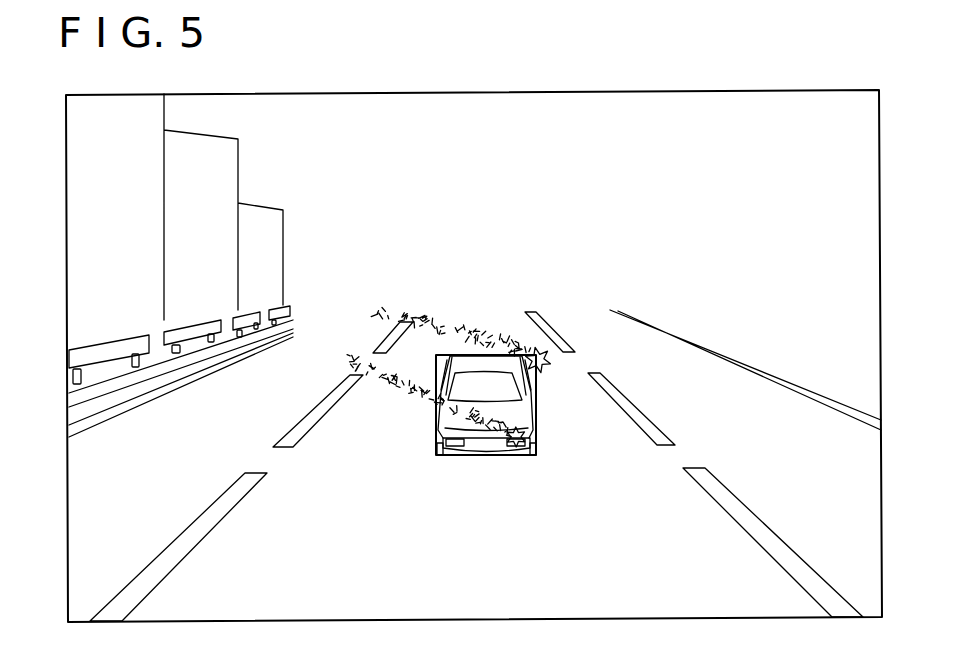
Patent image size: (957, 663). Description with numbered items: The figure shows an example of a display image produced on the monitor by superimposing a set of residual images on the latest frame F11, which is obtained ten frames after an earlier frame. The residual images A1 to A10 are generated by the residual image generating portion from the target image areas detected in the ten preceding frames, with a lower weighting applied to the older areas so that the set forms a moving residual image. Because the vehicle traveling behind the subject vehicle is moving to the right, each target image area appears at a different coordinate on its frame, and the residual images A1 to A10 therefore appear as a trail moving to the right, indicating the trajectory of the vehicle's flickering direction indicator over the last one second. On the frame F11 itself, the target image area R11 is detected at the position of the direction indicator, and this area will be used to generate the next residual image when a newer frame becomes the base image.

The frame F11 is at (662, 92).
The residual image A1 is at (440, 323).
The residual image A10 is at (459, 366).
The target image area R11 is at (552, 361).